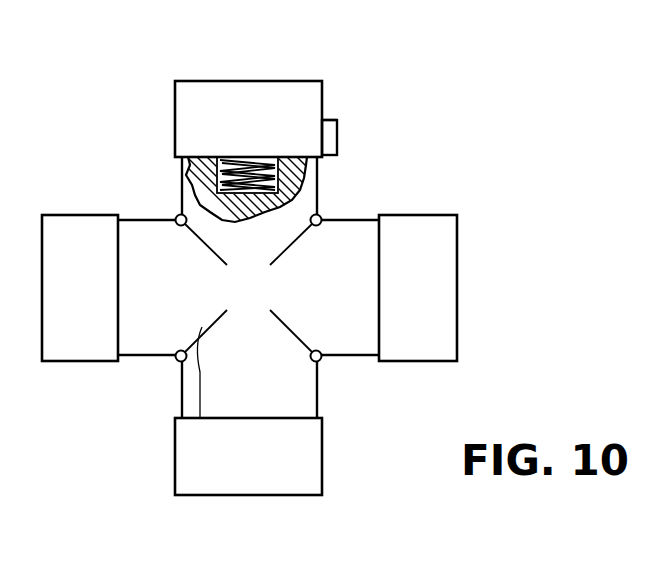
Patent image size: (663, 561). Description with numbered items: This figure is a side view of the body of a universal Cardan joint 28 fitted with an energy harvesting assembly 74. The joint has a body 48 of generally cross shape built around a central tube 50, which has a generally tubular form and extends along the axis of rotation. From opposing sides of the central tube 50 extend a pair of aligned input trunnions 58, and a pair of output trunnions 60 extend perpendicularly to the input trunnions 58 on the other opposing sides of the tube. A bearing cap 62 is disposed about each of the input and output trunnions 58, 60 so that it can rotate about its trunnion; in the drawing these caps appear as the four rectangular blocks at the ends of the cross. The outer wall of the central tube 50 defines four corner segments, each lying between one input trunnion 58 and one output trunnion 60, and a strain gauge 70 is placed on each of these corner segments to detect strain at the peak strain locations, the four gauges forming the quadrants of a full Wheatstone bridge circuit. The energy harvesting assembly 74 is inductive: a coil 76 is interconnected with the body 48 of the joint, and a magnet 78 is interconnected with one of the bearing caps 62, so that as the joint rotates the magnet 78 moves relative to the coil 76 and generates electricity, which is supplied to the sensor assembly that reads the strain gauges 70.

The universal Cardan joint 28 is at (519, 103).
The body 48 is at (367, 216).
The central tube 50 is at (200, 345).
The input trunnions 58 is at (188, 177).
The output trunnions 60 is at (131, 348).
The bearing cap 62 is at (308, 92).
The strain gauge 70 is at (177, 216).
The energy harvesting assembly 74 is at (337, 129).
The coil 76 is at (190, 163).
The magnet 78 is at (332, 127).